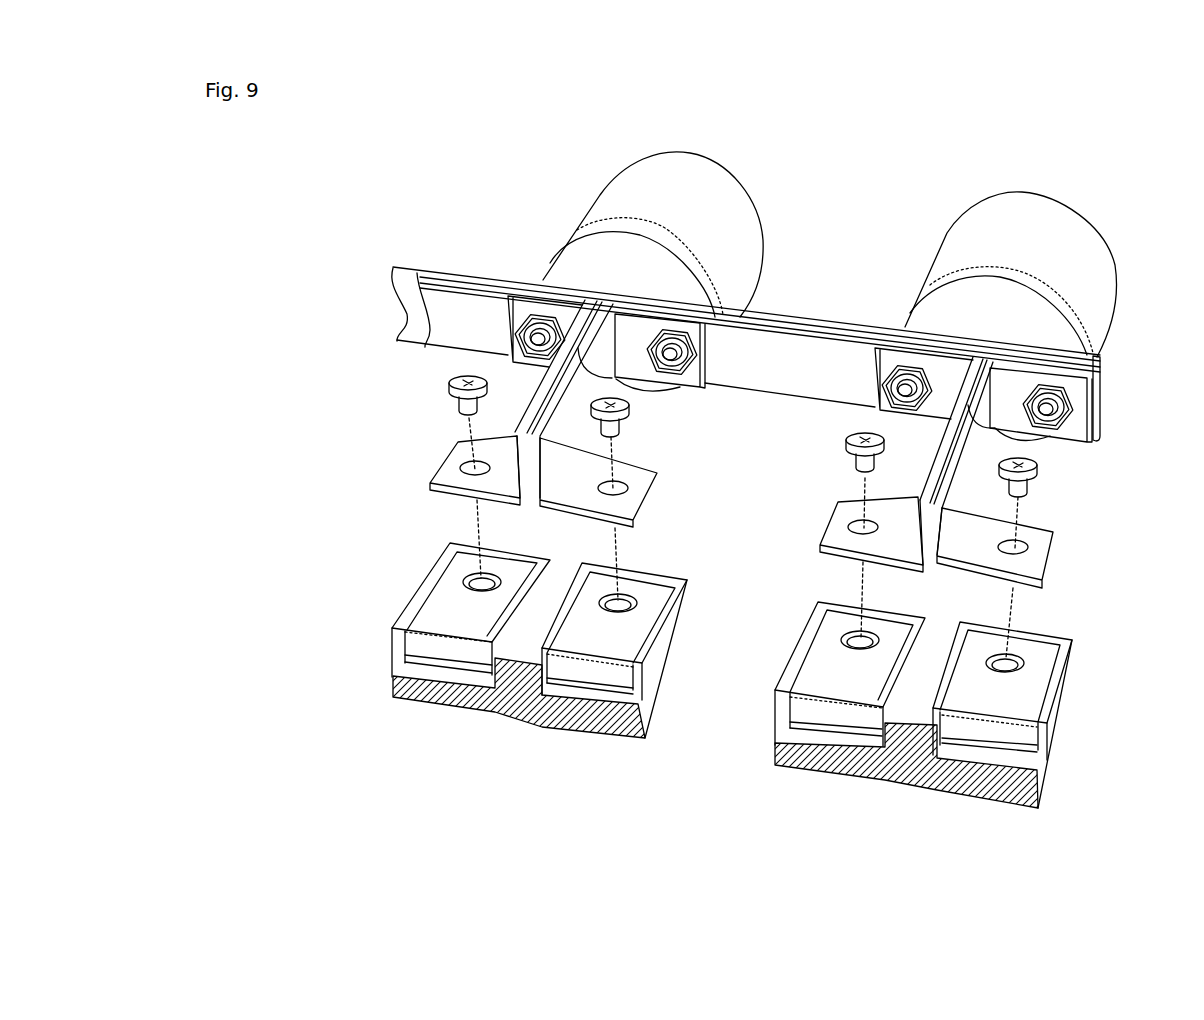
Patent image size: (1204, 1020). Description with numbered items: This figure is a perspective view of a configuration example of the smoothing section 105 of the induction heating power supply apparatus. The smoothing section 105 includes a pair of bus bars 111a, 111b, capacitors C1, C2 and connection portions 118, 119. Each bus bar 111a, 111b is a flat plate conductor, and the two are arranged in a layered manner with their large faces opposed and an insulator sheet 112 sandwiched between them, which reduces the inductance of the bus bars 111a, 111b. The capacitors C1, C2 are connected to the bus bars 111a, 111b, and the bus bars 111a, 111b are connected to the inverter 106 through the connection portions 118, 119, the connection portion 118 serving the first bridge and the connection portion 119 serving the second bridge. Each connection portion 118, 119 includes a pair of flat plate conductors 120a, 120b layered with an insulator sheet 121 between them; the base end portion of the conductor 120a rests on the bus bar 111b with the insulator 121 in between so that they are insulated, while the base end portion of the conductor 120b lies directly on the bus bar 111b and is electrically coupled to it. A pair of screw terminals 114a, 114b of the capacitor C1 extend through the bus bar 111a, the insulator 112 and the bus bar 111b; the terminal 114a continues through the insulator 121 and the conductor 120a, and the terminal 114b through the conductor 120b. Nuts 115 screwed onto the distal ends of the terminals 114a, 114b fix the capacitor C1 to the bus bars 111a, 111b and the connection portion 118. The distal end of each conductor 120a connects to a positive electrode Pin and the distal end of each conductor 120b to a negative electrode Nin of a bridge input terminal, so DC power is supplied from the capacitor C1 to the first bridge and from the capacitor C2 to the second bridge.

The smoothing section 105 is at (843, 236).
The capacitor C1 is at (1092, 220).
The capacitor C2 is at (736, 185).
The inverter 106 is at (515, 740).
The bus bar 111a is at (438, 268).
The bus bar 111b is at (443, 339).
The insulator sheet 112 is at (407, 307).
The terminal 114a is at (524, 332).
The terminal 114b is at (703, 335).
The nut 115 is at (536, 330).
The connection portion 118 is at (1068, 558).
The connection portion 119 is at (660, 497).
The flat plate conductor 120a is at (517, 438).
The flat plate conductor 120b is at (557, 445).
The insulator sheet 121 is at (612, 376).
The positive electrode Pin is at (448, 624).
The negative electrode Nin is at (605, 648).